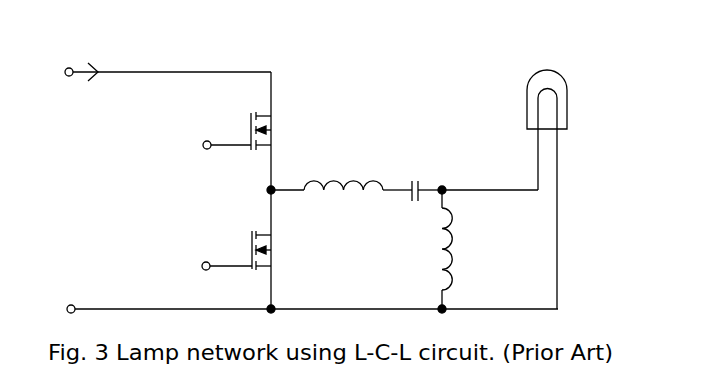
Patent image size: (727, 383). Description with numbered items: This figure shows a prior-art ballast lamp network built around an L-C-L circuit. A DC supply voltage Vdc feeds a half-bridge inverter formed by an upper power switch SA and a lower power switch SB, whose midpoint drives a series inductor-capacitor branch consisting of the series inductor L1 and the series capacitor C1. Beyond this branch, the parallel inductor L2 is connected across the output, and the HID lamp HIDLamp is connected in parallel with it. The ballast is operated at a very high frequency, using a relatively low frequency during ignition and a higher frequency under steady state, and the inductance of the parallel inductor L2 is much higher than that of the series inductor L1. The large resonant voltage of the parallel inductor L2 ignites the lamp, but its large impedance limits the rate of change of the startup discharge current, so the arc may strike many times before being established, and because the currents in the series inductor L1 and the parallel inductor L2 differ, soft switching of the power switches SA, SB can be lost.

The DC supply voltage Vdc is at (168, 53).
The power switch SA is at (237, 126).
The power switch SB is at (236, 245).
The series inductor L1 is at (341, 165).
The series capacitor C1 is at (420, 171).
The parallel inductor L2 is at (468, 249).
The HID lamp HIDLamp is at (522, 175).